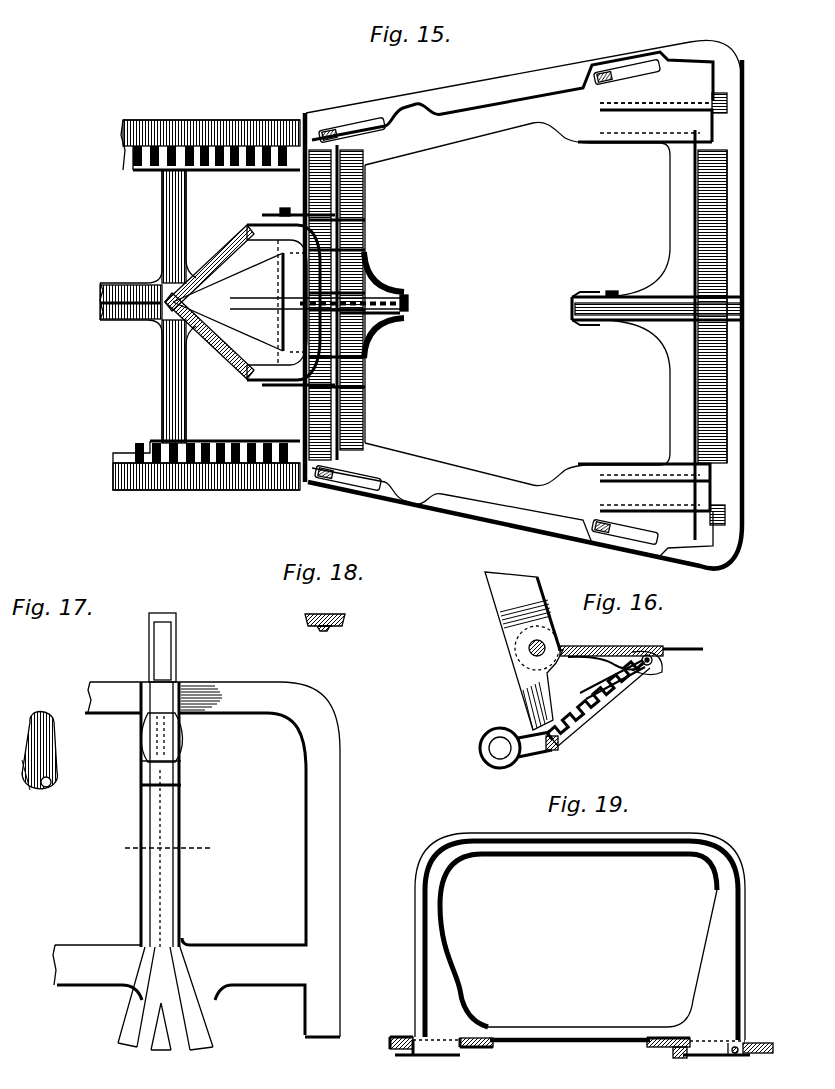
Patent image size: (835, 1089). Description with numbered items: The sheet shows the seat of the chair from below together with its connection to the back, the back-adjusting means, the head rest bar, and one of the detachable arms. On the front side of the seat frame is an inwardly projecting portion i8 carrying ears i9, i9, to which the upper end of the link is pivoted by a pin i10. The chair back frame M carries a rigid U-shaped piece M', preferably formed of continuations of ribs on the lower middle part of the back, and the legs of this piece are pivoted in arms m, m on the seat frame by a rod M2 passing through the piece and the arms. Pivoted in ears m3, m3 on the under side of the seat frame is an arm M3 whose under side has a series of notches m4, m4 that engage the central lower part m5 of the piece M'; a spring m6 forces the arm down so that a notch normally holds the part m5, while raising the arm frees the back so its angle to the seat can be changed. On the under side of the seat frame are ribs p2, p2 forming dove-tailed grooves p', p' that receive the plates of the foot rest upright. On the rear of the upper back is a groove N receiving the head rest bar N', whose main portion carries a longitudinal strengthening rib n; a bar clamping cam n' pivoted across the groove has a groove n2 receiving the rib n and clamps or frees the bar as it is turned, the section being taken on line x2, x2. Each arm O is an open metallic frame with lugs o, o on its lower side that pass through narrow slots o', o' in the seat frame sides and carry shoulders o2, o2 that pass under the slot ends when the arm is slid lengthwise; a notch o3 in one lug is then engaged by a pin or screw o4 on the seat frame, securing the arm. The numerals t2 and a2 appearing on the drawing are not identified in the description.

In FIG. 15, the magazine tooth t2 is at (152, 174).
In FIG. 15, the arm m is at (262, 214).
In FIG. 15, the groove N is at (131, 306).
In FIG. 18, the groove N is at (339, 608).
In FIG. 17, the groove N is at (167, 866).
In FIG. 15, the rod M2 is at (290, 323).
In FIG. 16, the rod M2 is at (528, 649).
In FIG. 15, the rigid U-shaped piece M' is at (276, 319).
In FIG. 16, the rigid U-shaped piece M' is at (513, 651).
In FIG. 15, the chair back frame M is at (265, 308).
In FIG. 15, the ear m3 is at (372, 292).
In FIG. 16, the ear m3 is at (660, 661).
In FIG. 15, the arm M3 is at (410, 302).
In FIG. 16, the arm M3 is at (518, 762).
In FIG. 15, the central lower part m5 is at (372, 340).
In FIG. 16, the central lower part m5 is at (562, 750).
In FIG. 15, the inwardly projecting portion i8 is at (640, 328).
In FIG. 15, the ear i9 is at (588, 296).
In FIG. 15, the pin i10 is at (617, 292).
In FIG. 15, the rib p2 is at (705, 103).
In FIG. 15, the groove p' is at (544, 304).
In FIG. 15, the slot o' is at (487, 302).
In FIG. 19, the slot o' is at (620, 1060).
In FIG. 15, the frame opening a2 is at (434, 462).
In FIG. 16, the frame opening a2 is at (605, 646).
In FIG. 17, the bar N' is at (161, 753).
In FIG. 18, the bar clamping cam n' is at (311, 641).
In FIG. 17, the bar clamping cam n' is at (181, 859).
In FIG. 17, the groove n2 is at (32, 782).
In FIG. 18, the longitudinal strengthening rib n is at (344, 636).
In FIG. 17, the section line x2 is at (165, 847).
In FIG. 16, the notch m4 is at (585, 720).
In FIG. 16, the spring m6 is at (622, 690).
In FIG. 19, the tenon or lug o is at (580, 957).
In FIG. 19, the shoulder o2 is at (405, 1057).
In FIG. 19, the notch o3 is at (733, 1048).
In FIG. 19, the pin or screw o4 is at (730, 1057).